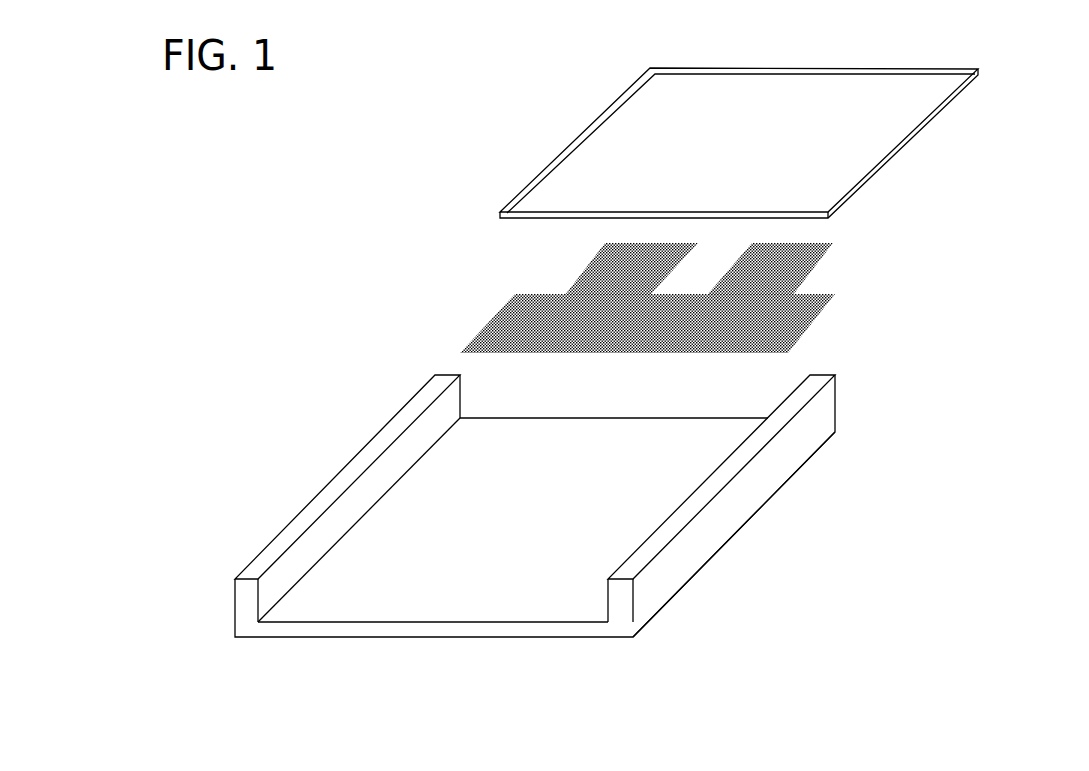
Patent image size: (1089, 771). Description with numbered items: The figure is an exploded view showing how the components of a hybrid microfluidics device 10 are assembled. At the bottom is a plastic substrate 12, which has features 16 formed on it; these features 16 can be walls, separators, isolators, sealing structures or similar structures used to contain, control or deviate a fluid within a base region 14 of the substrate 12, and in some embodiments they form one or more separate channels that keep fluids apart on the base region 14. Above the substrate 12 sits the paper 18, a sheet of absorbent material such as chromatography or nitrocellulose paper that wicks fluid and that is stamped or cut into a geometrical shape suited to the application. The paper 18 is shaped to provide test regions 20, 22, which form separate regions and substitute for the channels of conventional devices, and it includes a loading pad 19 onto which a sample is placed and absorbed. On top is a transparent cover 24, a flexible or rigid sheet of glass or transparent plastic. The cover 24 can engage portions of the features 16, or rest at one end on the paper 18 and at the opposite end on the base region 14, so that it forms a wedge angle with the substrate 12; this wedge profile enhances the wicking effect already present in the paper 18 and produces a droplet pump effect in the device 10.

The hybrid microfluidics device 10 is at (260, 213).
The plastic substrate 12 is at (532, 627).
The base region 14 is at (580, 452).
The features 16 is at (353, 463).
The paper 18 is at (414, 310).
The loading pad 19 is at (811, 317).
The test region 20 is at (780, 263).
The test region 22 is at (612, 262).
The transparent cover 24 is at (875, 120).